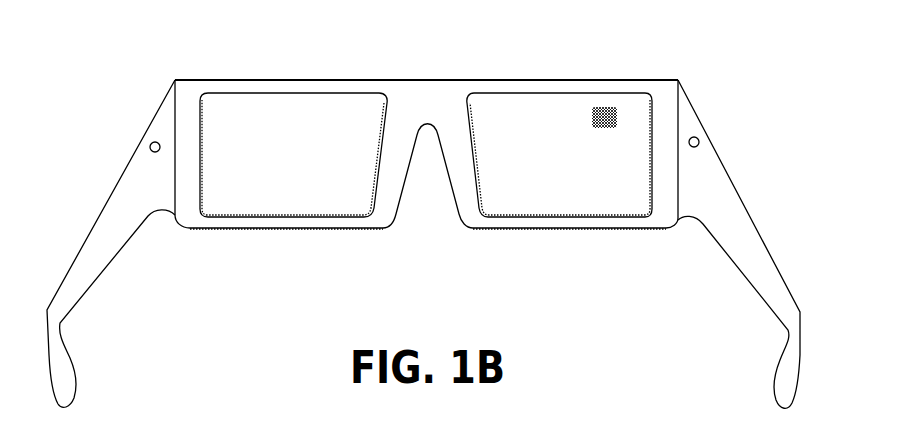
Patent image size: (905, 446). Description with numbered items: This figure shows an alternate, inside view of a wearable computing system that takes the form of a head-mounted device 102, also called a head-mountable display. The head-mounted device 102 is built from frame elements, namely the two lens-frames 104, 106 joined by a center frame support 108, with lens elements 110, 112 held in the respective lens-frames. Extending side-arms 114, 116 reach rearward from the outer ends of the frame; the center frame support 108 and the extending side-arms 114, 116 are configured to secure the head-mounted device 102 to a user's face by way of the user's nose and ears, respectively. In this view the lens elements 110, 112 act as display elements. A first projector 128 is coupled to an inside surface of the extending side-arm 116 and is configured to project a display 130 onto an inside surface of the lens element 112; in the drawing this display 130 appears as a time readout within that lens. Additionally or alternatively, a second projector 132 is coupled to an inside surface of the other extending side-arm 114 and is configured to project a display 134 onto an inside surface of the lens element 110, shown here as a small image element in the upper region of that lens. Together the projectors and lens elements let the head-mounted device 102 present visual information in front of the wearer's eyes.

The head-mounted device 102 is at (423, 212).
The lens-frame 104 is at (641, 230).
The lens-frame 106 is at (220, 230).
The center frame support 108 is at (425, 80).
The lens element 110 is at (559, 186).
The lens element 112 is at (293, 190).
The extending side-arm 114 is at (739, 244).
The extending side-arm 116 is at (111, 243).
The first projector 128 is at (150, 145).
The display 130 is at (286, 123).
The second projector 132 is at (694, 136).
The display 134 is at (592, 122).